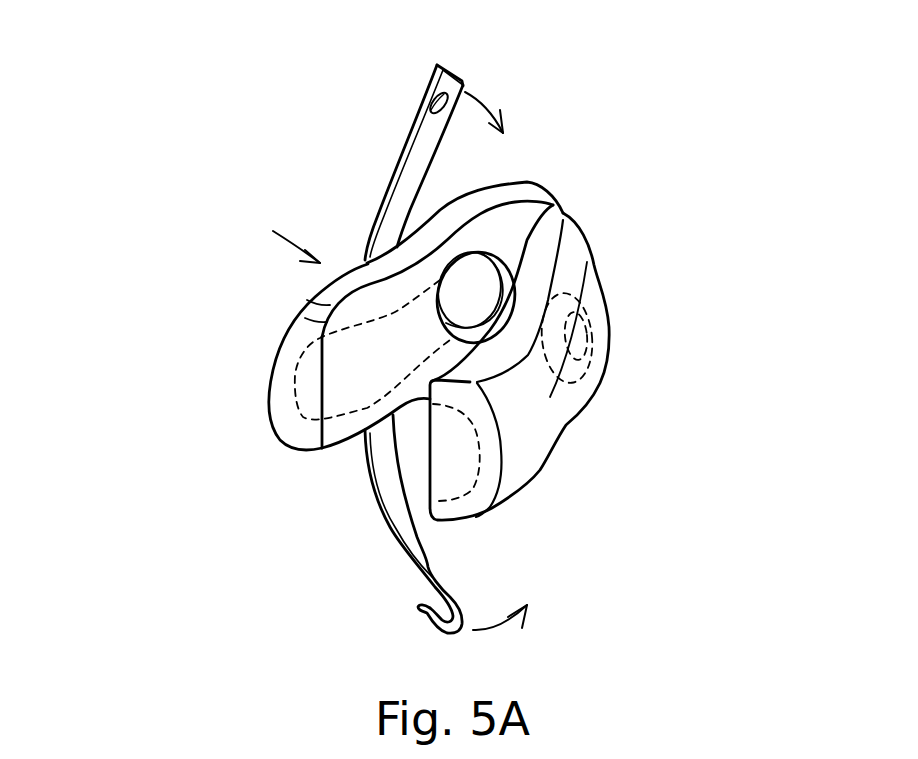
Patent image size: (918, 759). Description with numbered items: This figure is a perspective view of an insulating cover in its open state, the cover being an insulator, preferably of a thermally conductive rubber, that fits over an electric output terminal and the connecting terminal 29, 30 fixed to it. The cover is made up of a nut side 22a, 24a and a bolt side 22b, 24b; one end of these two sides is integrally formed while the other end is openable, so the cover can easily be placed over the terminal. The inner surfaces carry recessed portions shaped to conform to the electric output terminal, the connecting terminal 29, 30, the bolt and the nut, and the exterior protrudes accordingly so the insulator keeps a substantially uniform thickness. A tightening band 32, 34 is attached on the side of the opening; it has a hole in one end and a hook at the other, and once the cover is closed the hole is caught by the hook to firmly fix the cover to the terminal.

The tightening band 32 is at (504, 326).
The tightening band 34 is at (450, 70).
The connecting terminal 29 is at (557, 283).
The connecting terminal 30 is at (695, 168).
The nut side 22a is at (321, 316).
The nut side 24a is at (312, 293).
The bolt side 22b is at (634, 366).
The bolt side 24b is at (600, 290).